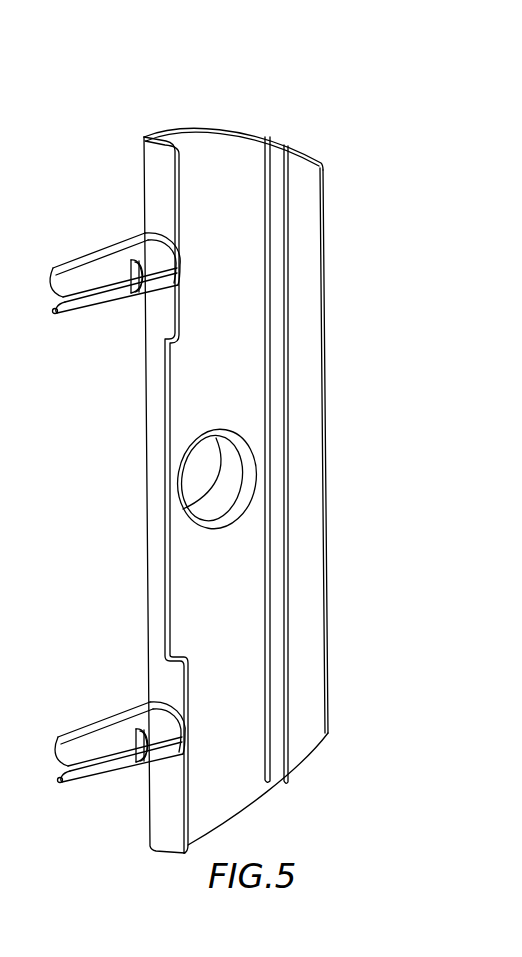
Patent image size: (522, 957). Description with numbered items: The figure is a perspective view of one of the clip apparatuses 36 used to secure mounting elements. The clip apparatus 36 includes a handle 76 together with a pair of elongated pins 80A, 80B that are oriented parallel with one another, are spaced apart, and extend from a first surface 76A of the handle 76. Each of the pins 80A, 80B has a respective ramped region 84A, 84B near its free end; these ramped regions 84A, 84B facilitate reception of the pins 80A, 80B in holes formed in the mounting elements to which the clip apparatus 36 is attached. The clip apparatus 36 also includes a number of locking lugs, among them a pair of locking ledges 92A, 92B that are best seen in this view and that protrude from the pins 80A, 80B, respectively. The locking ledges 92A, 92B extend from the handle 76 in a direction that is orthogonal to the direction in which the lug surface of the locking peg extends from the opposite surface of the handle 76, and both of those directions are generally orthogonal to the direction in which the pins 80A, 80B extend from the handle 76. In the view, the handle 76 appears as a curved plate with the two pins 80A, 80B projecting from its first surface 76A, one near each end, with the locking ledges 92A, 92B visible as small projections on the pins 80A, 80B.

The clip apparatus 36 is at (183, 451).
The handle 76 is at (240, 132).
The first surface 76A is at (155, 450).
The elongated pin 80A is at (108, 274).
The elongated pin 80B is at (111, 737).
The ramped region 84A is at (82, 256).
The ramped region 84B is at (111, 719).
The locking ledge 92A is at (147, 293).
The locking ledge 92B is at (128, 773).